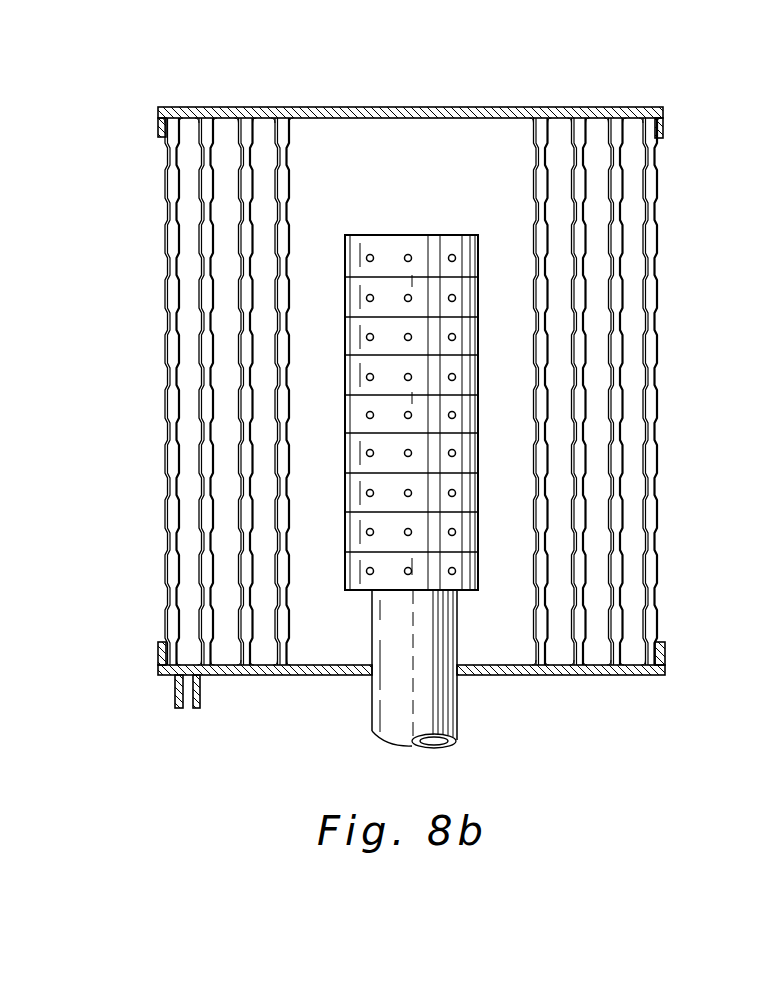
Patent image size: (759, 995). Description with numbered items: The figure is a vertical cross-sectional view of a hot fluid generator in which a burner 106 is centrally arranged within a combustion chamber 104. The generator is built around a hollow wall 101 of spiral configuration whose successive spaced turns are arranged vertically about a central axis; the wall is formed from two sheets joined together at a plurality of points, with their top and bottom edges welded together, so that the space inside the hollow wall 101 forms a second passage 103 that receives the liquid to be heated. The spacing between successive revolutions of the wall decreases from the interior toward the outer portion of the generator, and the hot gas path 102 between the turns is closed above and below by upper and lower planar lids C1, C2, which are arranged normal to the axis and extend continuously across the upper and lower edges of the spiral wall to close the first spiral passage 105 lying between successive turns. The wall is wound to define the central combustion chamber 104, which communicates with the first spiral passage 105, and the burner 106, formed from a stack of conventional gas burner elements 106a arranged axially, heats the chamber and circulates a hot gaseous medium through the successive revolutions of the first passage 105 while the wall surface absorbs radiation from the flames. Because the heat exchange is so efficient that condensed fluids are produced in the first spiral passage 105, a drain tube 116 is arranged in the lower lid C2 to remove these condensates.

The hollow wall 101 is at (374, 397).
The heat transfer tube 102 is at (290, 258).
The second passage 103 is at (288, 338).
The combustion chamber 104 is at (468, 197).
The first spiral passage 105 is at (628, 540).
The burner 106 is at (474, 606).
The gas burner elements 106a is at (345, 500).
The drain tube 116 is at (200, 690).
The upper planar lid C1 is at (385, 107).
The lower planar lid C2 is at (552, 677).